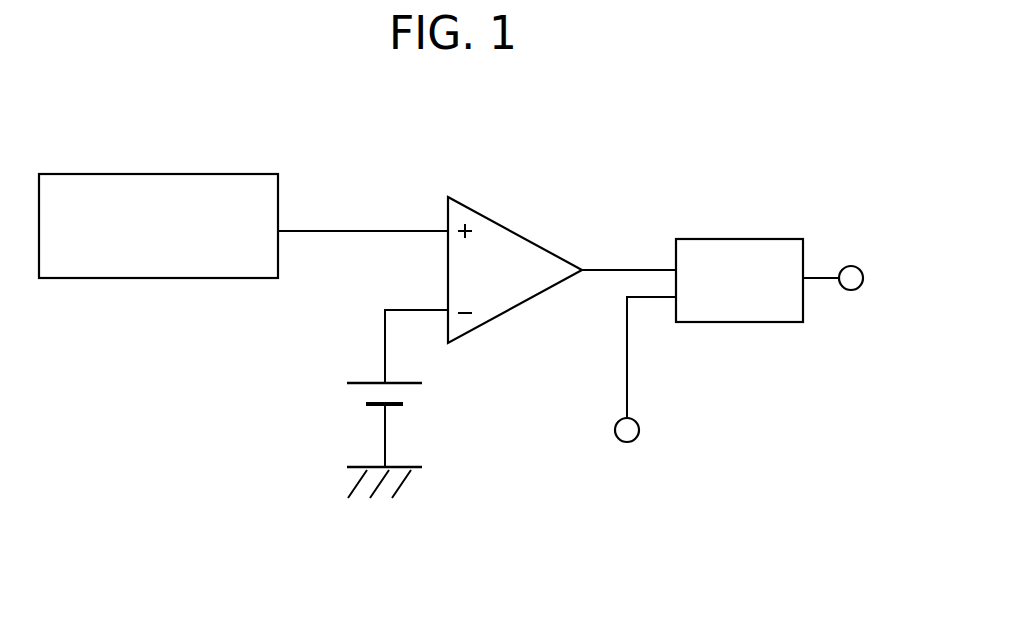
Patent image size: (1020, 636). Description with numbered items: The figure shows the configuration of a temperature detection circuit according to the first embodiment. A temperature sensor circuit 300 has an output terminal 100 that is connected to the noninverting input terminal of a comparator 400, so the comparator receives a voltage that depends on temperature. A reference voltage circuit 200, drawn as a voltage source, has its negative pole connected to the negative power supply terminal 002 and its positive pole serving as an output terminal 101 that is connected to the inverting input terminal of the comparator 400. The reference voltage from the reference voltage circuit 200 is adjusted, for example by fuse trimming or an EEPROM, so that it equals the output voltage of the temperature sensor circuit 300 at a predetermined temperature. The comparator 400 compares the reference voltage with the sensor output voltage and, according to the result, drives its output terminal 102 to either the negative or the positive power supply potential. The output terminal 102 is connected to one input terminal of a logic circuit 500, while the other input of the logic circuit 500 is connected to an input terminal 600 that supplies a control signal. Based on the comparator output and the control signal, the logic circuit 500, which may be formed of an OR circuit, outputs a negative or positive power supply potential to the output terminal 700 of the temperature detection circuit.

The temperature sensor circuit 300 is at (207, 174).
The output terminal 100 is at (353, 231).
The comparator 400 is at (500, 225).
The output terminal 102 is at (603, 269).
The logic circuit 500 is at (743, 239).
The output terminal 700 is at (858, 267).
The output terminal 101 is at (385, 332).
The reference voltage circuit 200 is at (352, 400).
The negative power supply terminal 002 is at (413, 466).
The input terminal 600 is at (665, 400).